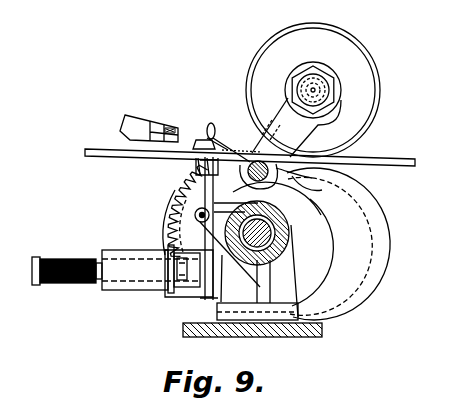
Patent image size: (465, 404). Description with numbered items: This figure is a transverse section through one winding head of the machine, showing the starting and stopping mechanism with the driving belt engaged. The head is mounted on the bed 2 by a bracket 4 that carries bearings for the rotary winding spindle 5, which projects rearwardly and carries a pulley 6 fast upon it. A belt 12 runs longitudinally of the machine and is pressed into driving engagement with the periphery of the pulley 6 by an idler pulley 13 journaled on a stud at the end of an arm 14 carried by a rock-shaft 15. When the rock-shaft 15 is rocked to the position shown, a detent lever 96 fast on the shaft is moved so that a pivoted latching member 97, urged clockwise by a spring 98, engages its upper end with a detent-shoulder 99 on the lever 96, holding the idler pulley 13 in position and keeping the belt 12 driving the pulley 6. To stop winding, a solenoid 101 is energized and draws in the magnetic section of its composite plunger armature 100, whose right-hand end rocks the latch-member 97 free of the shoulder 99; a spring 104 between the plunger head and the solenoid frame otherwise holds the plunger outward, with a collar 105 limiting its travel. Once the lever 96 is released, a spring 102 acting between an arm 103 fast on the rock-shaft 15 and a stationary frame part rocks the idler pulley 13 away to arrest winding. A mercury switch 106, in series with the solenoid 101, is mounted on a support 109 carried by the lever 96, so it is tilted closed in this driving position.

The bed 2 is at (299, 334).
The bracket 4 is at (282, 264).
The winding spindle 5 is at (268, 236).
The pulley 6 is at (330, 206).
The belt 12 is at (386, 159).
The idler pulley 13 is at (368, 70).
The arm 14 is at (305, 123).
The rock-shaft 15 is at (310, 173).
The detent lever 96 is at (268, 180).
The latching member 97 is at (280, 222).
The spring 98 is at (212, 262).
The detent-shoulder 99 is at (200, 160).
The plunger armature 100 is at (148, 288).
The solenoid 101 is at (122, 290).
The spring 102 is at (178, 206).
The arm 103 is at (246, 145).
The spring 104 is at (56, 286).
The collar 105 is at (199, 288).
The mercury switch 106 is at (150, 121).
The support 109 is at (205, 148).